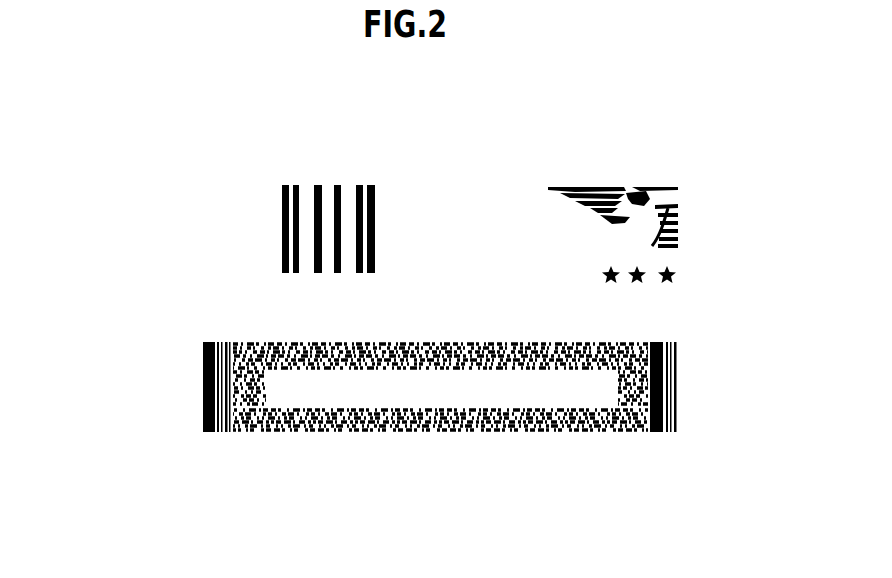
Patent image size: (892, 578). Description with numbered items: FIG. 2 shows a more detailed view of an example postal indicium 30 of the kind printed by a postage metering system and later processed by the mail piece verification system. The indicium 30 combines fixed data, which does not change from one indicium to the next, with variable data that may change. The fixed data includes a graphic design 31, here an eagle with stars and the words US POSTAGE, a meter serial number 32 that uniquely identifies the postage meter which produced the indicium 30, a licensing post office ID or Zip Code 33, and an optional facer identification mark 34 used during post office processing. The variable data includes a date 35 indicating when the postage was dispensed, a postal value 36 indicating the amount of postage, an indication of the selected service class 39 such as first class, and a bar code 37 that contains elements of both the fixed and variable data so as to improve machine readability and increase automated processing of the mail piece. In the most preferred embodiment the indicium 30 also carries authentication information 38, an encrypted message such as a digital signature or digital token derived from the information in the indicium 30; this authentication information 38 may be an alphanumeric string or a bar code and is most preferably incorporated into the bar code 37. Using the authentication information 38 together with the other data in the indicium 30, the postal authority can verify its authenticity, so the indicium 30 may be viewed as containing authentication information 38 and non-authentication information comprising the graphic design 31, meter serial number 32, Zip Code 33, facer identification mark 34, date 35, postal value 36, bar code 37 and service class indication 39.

The postal indicium 30 is at (263, 126).
The graphic design 31 is at (615, 185).
The meter serial number 32 is at (172, 318).
The licensing post office ID (Zip Code) 33 is at (680, 302).
The facer identification mark (FIM) 34 is at (373, 208).
The date 35 is at (503, 192).
The postal value 36 is at (458, 237).
The bar code 37 is at (203, 398).
The authentication information 38 is at (220, 188).
The service class indication 39 is at (107, 252).